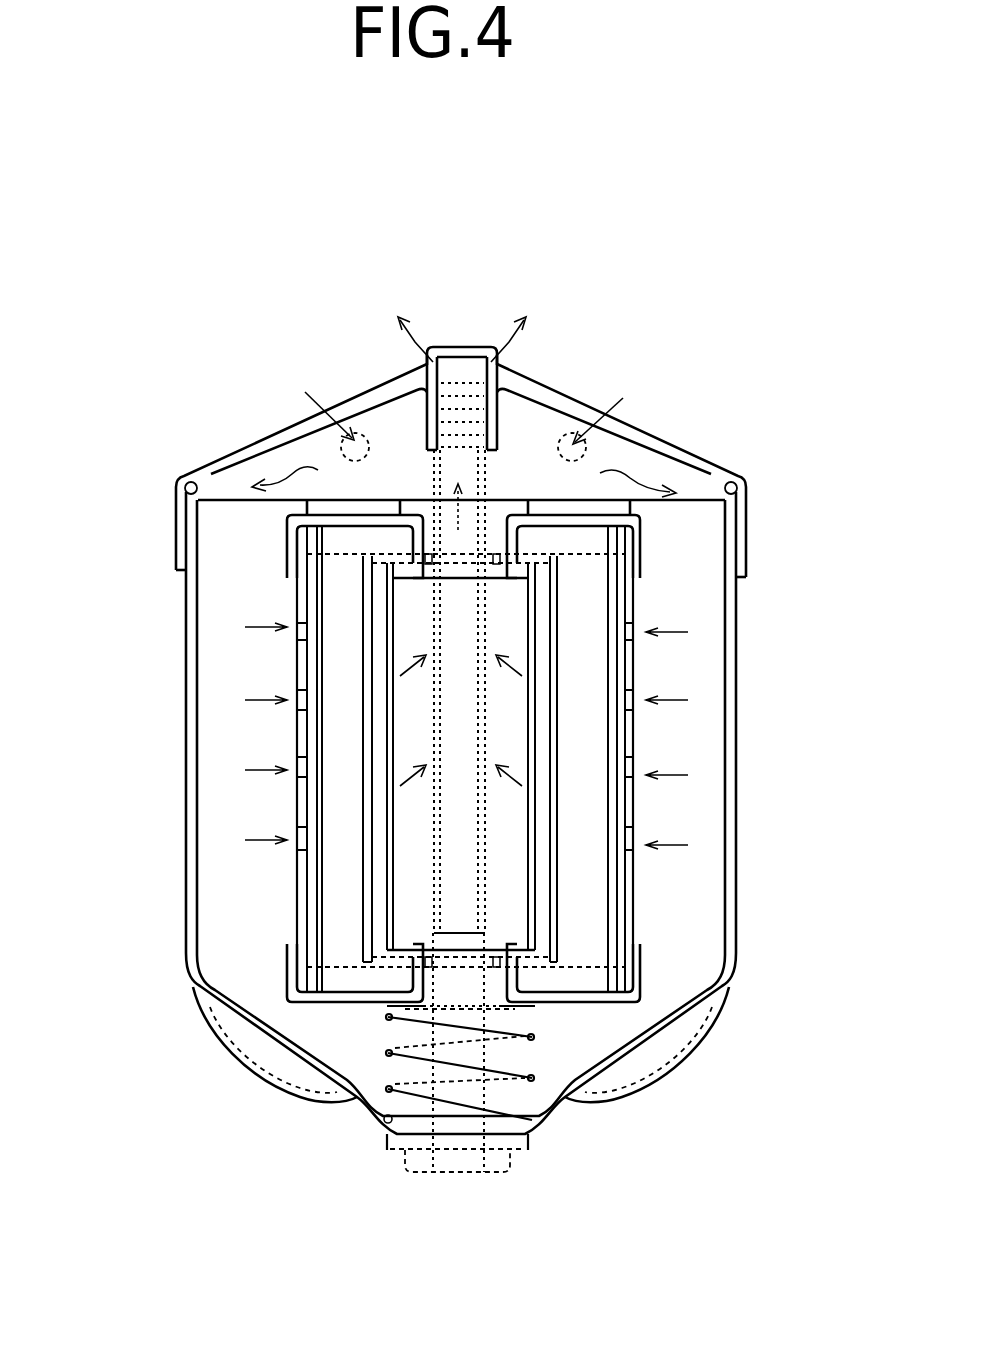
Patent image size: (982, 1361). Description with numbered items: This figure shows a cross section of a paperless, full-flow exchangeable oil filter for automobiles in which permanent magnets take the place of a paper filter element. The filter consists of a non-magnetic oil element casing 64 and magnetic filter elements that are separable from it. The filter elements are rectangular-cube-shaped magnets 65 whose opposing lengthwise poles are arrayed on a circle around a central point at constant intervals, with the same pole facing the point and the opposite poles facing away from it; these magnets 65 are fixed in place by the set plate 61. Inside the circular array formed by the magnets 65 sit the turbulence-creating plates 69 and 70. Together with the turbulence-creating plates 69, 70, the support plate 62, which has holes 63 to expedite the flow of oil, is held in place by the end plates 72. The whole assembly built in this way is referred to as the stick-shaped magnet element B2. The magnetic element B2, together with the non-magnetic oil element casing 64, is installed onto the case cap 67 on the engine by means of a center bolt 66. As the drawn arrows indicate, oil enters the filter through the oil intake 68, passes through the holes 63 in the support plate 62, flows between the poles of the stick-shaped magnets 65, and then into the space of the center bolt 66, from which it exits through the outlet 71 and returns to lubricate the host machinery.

The set plate 61 is at (620, 546).
The support plate 62 is at (636, 812).
The holes 63 is at (630, 785).
The non-magnetic oil element casing 64 is at (187, 838).
The rectangular-cube-shaped magnets 65 is at (580, 655).
The center bolt 66 is at (458, 1175).
The case cap 67 is at (657, 433).
The oil intake 68 is at (567, 437).
The turbulence-creating plate 69 is at (556, 607).
The turbulence-creating plate 70 is at (536, 727).
The outlet 71 is at (466, 347).
The end plates 72 is at (640, 541).
The stick-shaped magnet element B2 is at (293, 601).